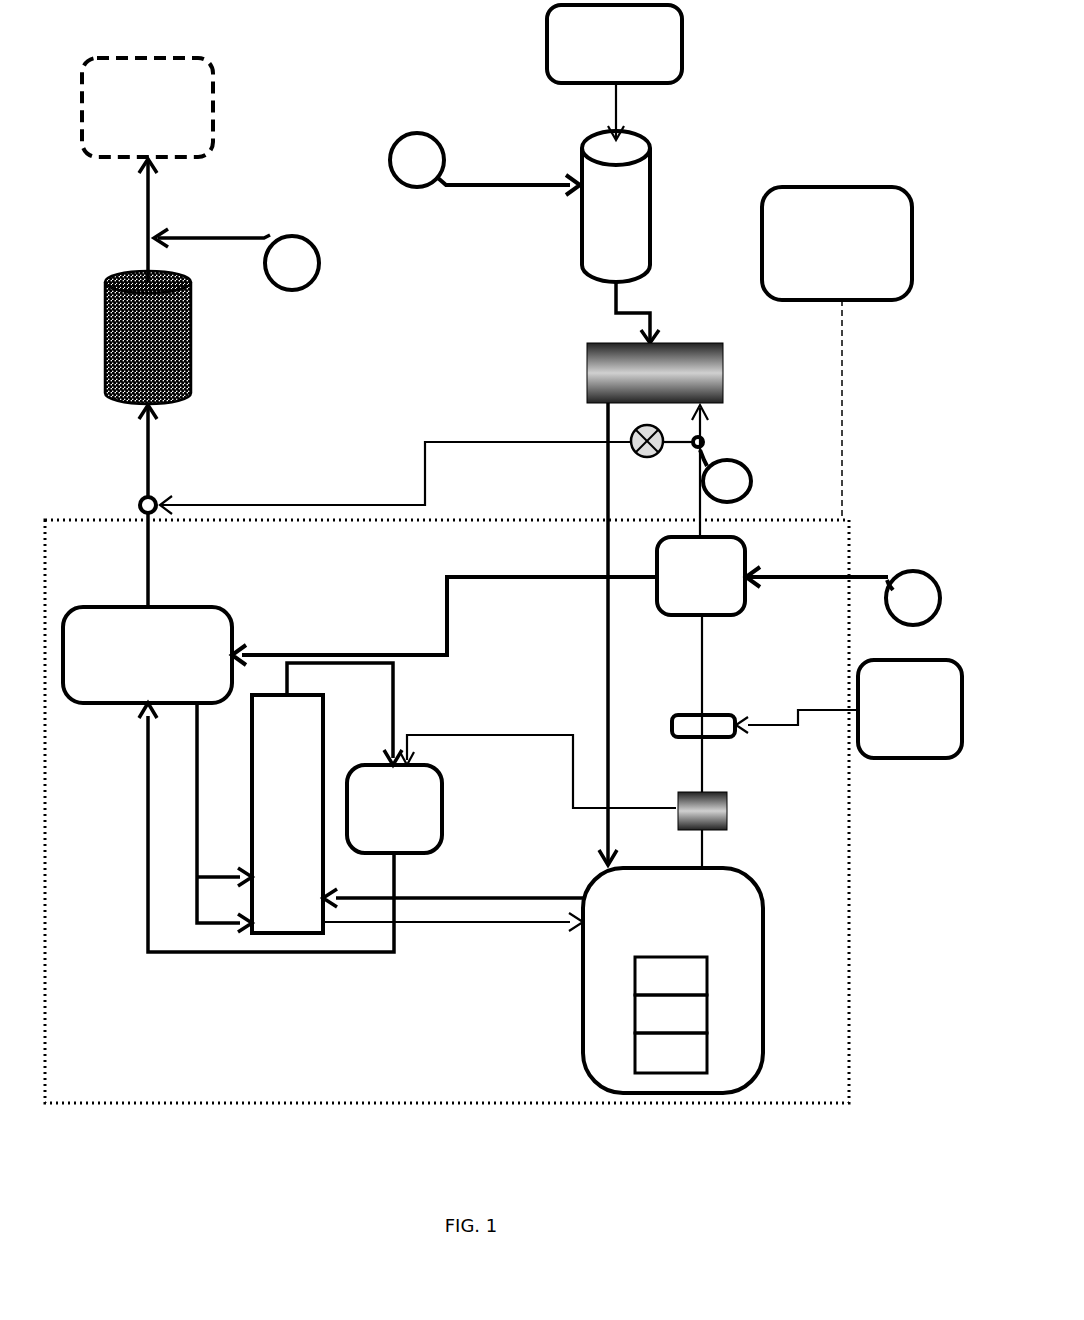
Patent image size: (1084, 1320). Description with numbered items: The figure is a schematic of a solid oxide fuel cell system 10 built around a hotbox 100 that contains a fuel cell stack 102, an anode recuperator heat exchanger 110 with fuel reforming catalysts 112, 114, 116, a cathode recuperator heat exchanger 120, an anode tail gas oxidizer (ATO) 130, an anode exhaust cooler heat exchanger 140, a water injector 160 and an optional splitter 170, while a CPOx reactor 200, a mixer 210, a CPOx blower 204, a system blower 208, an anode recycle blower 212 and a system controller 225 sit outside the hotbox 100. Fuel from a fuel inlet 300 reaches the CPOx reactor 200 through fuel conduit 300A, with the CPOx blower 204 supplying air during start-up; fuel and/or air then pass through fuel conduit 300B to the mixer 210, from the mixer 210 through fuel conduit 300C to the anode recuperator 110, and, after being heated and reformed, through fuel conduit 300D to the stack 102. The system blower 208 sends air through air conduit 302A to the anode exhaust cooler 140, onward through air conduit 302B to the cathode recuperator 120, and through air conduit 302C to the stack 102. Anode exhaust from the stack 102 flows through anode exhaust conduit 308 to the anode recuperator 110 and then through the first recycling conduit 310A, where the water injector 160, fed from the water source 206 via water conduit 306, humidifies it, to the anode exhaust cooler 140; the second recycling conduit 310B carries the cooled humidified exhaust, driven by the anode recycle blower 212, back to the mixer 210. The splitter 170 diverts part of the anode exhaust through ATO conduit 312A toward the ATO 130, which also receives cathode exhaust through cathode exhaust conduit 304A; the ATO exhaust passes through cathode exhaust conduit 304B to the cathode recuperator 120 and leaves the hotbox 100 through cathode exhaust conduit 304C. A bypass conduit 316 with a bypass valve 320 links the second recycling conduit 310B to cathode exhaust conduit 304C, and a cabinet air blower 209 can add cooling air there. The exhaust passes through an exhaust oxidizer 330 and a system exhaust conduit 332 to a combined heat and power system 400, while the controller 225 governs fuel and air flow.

The SOFC system 10 is at (455, 1175).
The hotbox 100 is at (190, 1103).
The fuel cell stack 102 is at (270, 854).
The anode recuperator heat exchanger 110 is at (656, 951).
The fuel reforming catalyst 112 is at (654, 988).
The fuel reforming catalyst 114 is at (654, 1026).
The fuel reforming catalyst 116 is at (654, 1065).
The cathode recuperator heat exchanger 120 is at (131, 693).
The anode tail gas oxidizer (ATO) 130 is at (377, 838).
The anode exhaust cooler heat exchanger 140 is at (684, 600).
The water injector 160 is at (672, 722).
The splitter 170 is at (728, 812).
The catalytic partial oxidation (CPOx) reactor 200 is at (582, 208).
The CPOx blower 204 is at (401, 171).
The water source 206 is at (893, 749).
The system blower 208 is at (897, 609).
The cabinet air blower 209 is at (276, 274).
The mixer 210 is at (660, 332).
The anode recycle blower 212 is at (711, 492).
The system controller 225 is at (820, 288).
The fuel inlet 300 is at (660, 76).
The fuel conduit 300A is at (612, 118).
The fuel conduit 300B is at (612, 312).
The fuel conduit 300C is at (606, 540).
The fuel conduit 300D is at (450, 903).
The air conduit 302A is at (822, 577).
The air conduit 302B is at (445, 600).
The air conduit 302C is at (197, 898).
The cathode exhaust conduit 304A is at (343, 667).
The cathode exhaust conduit 304B is at (247, 952).
The cathode exhaust conduit 304C is at (145, 590).
The water conduit 306 is at (823, 712).
The anode exhaust conduit 308 is at (522, 930).
The first recycling conduit 310A is at (705, 678).
The second recycling conduit 310B is at (697, 508).
The ATO conduit 312A is at (470, 738).
The bypass conduit 316 is at (422, 468).
The bypass valve 320 is at (630, 437).
The exhaust oxidizer 330 is at (131, 356).
The system exhaust conduit 332 is at (150, 223).
The combined heat and power (CHP) system 400 is at (131, 144).